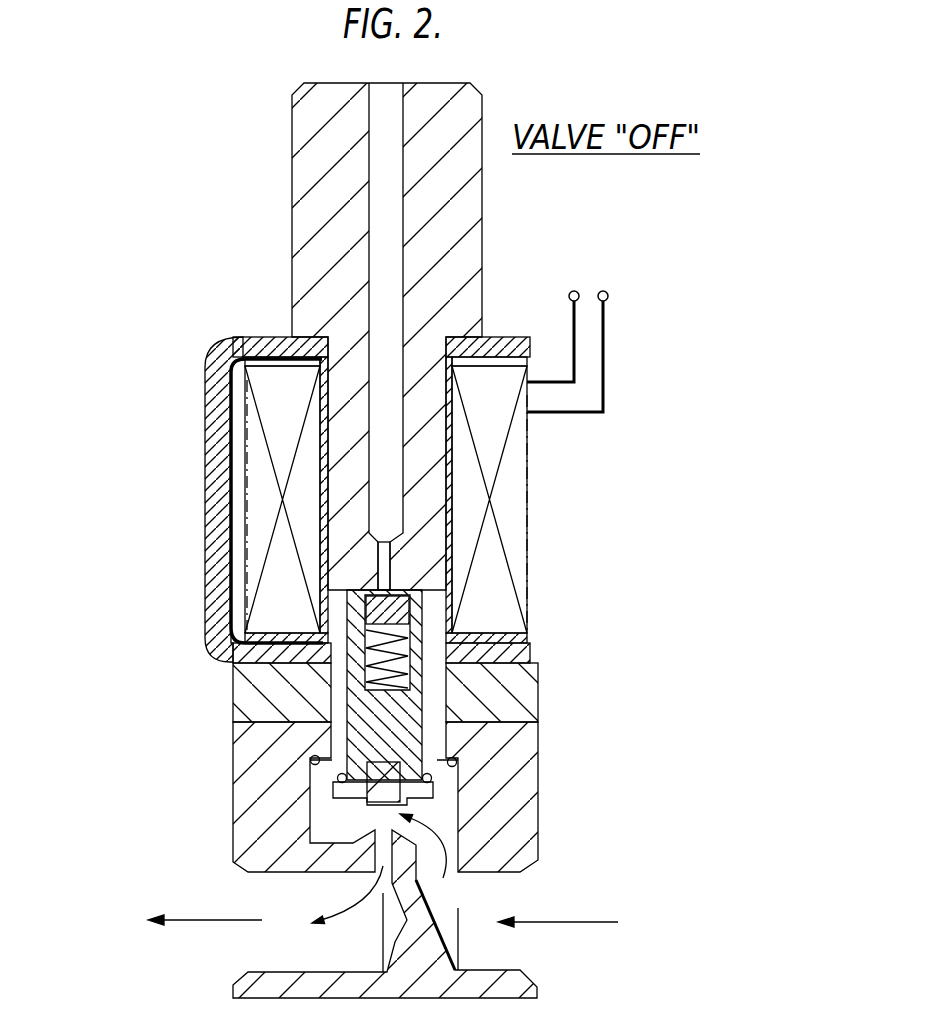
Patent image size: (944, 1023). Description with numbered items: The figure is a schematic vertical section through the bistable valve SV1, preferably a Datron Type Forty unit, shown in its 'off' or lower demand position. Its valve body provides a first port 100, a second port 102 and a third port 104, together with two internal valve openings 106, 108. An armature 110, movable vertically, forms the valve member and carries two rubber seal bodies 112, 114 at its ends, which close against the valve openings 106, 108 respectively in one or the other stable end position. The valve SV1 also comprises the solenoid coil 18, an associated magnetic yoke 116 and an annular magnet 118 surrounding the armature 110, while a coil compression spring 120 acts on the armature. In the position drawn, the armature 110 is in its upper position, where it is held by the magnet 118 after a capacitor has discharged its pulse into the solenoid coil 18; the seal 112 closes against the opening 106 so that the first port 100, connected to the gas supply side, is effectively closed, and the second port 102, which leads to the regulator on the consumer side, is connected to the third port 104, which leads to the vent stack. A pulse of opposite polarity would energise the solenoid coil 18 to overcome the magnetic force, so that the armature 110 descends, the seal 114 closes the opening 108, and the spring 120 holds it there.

The first port 100 is at (386, 79).
The magnetic yoke 116 is at (224, 356).
The solenoid coil 18 is at (518, 468).
The valve SV1 is at (494, 329).
The annular magnet 118 is at (530, 700).
The first valve opening 106 is at (364, 580).
The armature 110 is at (358, 700).
The rubber seal body 112 is at (410, 616).
The rubber seal body 114 is at (352, 810).
The coil compression spring 120 is at (338, 776).
The second valve opening 108 is at (366, 879).
The second port 102 is at (496, 900).
The third port 104 is at (272, 945).